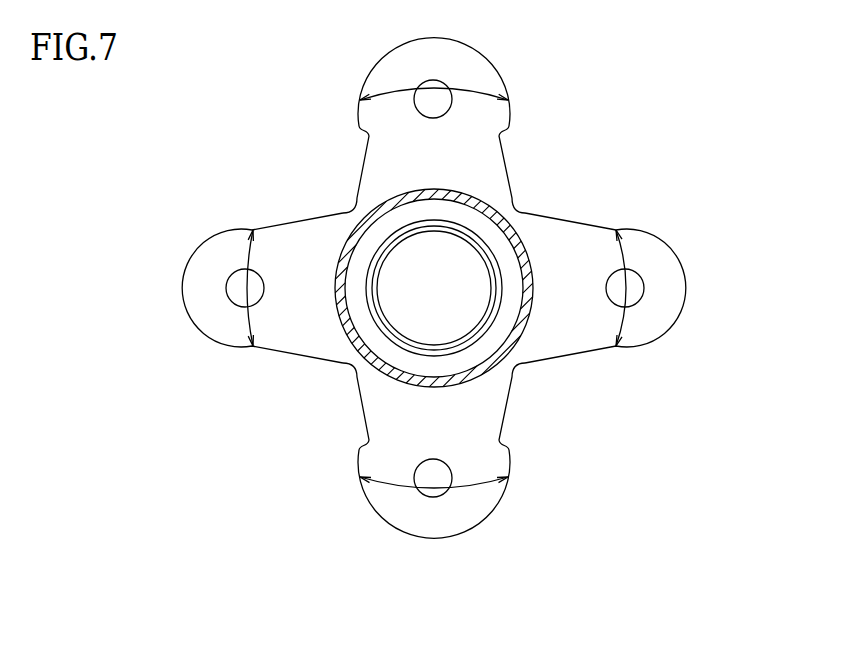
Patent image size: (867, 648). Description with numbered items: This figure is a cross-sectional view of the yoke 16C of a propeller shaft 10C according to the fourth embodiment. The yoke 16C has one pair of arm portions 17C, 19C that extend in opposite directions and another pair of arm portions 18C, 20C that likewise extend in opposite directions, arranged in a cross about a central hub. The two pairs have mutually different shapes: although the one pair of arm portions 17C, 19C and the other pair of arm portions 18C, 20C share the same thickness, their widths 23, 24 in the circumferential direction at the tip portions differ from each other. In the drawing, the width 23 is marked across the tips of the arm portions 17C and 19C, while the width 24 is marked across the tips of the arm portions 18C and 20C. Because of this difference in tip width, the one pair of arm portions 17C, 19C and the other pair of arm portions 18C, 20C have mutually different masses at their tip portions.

The propeller shaft 10C is at (471, 277).
The yoke 16C is at (471, 277).
The arm portion 17C is at (390, 68).
The arm portion 18C is at (217, 323).
The arm portion 19C is at (467, 515).
The arm portion 20C is at (667, 295).
The width 23 is at (465, 88).
The width 24 is at (250, 258).